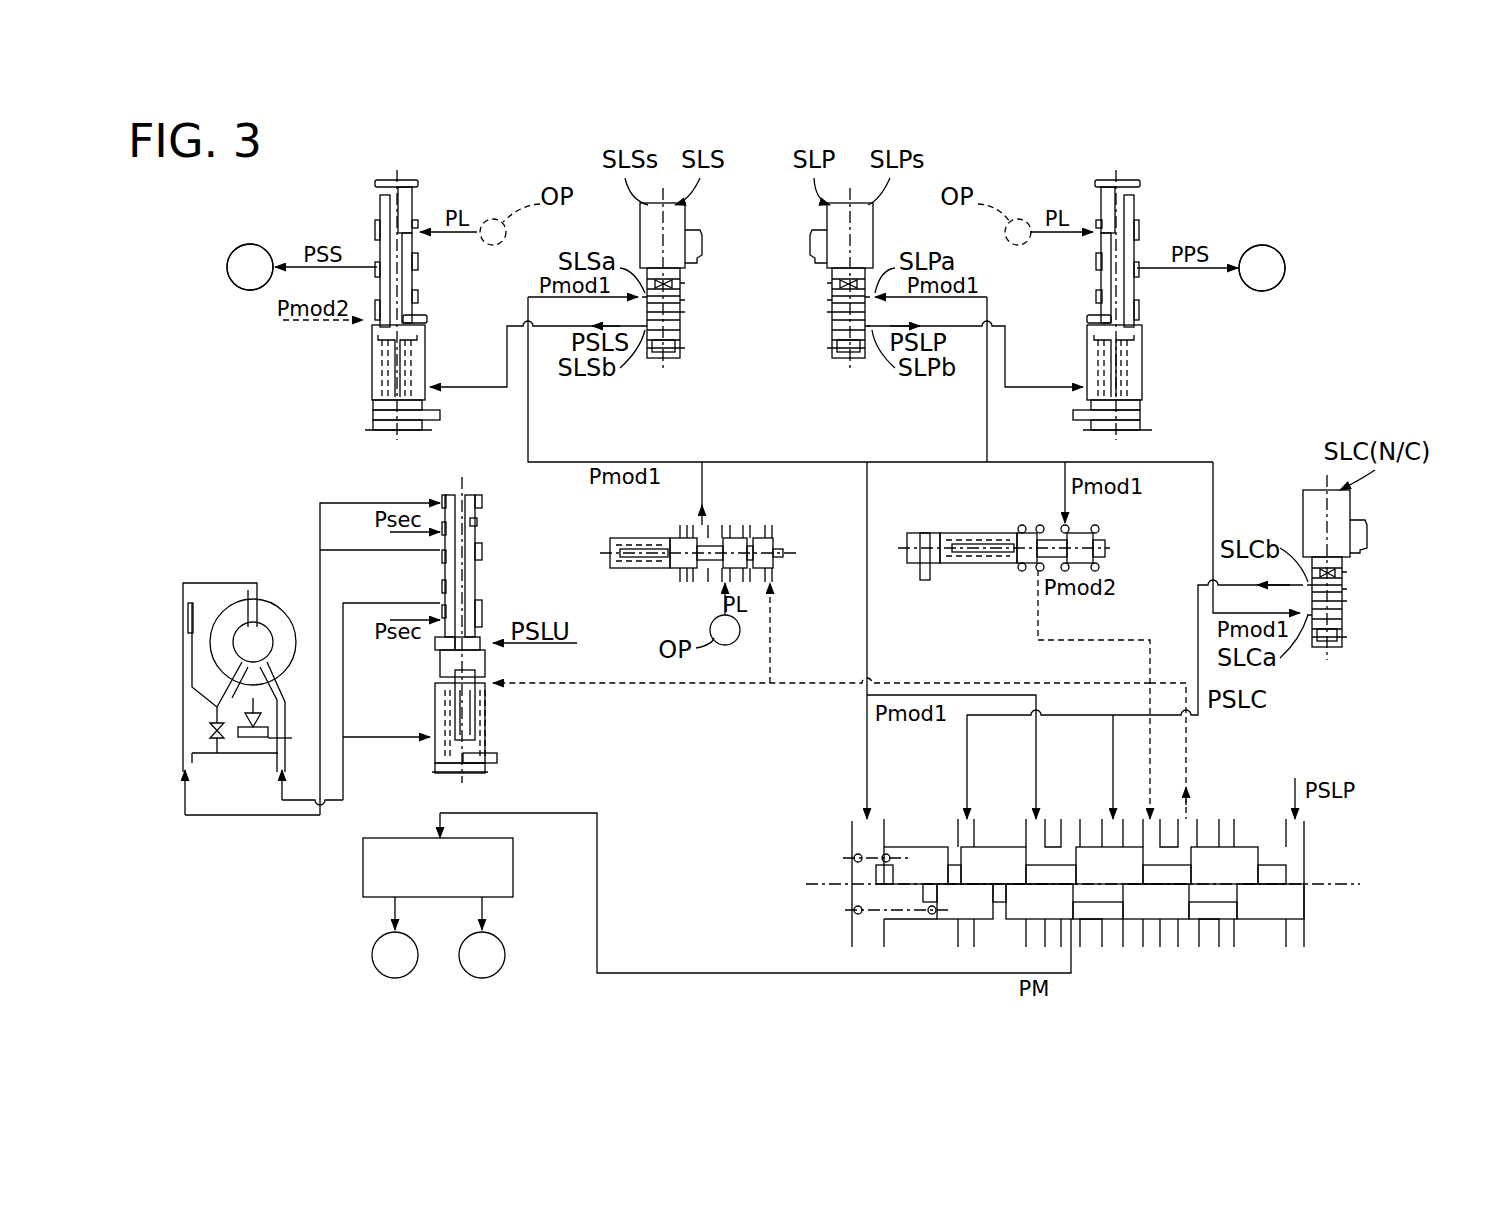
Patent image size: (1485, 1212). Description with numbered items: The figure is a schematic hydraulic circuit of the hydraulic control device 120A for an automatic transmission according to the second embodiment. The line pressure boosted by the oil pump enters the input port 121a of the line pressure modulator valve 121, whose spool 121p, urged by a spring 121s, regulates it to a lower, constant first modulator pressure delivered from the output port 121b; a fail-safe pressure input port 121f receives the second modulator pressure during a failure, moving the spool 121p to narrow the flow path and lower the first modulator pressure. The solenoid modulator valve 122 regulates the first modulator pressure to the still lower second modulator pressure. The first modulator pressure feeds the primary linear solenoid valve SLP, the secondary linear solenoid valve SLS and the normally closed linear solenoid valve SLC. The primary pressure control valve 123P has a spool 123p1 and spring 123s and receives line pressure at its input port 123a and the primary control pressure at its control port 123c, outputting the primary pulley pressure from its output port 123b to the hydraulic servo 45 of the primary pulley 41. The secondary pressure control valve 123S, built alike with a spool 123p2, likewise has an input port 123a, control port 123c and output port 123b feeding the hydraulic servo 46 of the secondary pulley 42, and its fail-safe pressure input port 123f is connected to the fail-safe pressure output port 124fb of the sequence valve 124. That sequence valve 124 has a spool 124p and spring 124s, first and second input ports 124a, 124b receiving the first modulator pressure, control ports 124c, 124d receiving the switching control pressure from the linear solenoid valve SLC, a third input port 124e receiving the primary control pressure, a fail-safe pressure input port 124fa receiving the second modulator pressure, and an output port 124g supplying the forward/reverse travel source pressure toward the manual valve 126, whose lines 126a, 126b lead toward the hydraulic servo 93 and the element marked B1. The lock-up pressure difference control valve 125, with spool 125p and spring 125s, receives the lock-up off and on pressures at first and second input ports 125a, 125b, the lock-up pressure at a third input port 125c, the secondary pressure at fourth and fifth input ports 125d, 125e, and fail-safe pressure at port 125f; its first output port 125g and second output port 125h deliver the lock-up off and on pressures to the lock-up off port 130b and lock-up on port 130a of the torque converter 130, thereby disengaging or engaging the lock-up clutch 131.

The hydraulic control device 120A is at (975, 152).
The secondary pressure control valve 123S is at (385, 175).
The primary pressure control valve 123P is at (1132, 175).
The input port 123a is at (420, 232).
The output port 123b is at (372, 252).
The control port 123c is at (427, 400).
The fail-safe pressure input port 123f is at (375, 312).
The spring 123s is at (422, 380).
The spool 123p1 is at (1100, 285).
The spool 123p2 is at (385, 212).
The hydraulic servo 46 is at (247, 244).
The secondary pulley 42 is at (250, 267).
The hydraulic servo 45 is at (1264, 244).
The primary pulley 41 is at (1262, 268).
The secondary linear solenoid valve SLS is at (671, 280).
The primary linear solenoid valve SLP is at (841, 280).
The linear solenoid valve SLC is at (1335, 567).
The line pressure modulator valve 121 is at (718, 555).
The input port 121a is at (722, 525).
The output port 121b is at (690, 525).
The fail-safe pressure input port 121f is at (775, 590).
The spool 121p is at (765, 540).
The spring 121s is at (640, 570).
The solenoid modulator valve 122 is at (933, 533).
The sequence valve 124 is at (1101, 867).
The first input port 124a is at (884, 817).
The second input port 124b is at (1030, 817).
The control port 124c is at (962, 817).
The control port 124d is at (1105, 817).
The third input port 124e is at (1286, 817).
The fail-safe pressure input port 124fa is at (1148, 817).
The fail-safe pressure output port 124fb is at (1198, 817).
The output port 124g is at (1075, 950).
The spool 124p is at (1255, 868).
The spring 124s is at (850, 911).
The lock-up pressure difference control valve 125 is at (469, 611).
The first input port 125a is at (440, 500).
The second input port 125b is at (438, 740).
The third input port 125c is at (490, 642).
The fourth input port 125d is at (482, 530).
The fifth input port 125e is at (440, 628).
The fail-safe pressure input port 125f is at (490, 690).
The first output port 125g is at (440, 548).
The second output port 125h is at (440, 605).
The spool 125p is at (485, 665).
The spring 125s is at (482, 742).
The manual valve 126 is at (439, 867).
The output port 126a is at (392, 905).
The output port 126b is at (485, 905).
The hydraulic servo 93 is at (395, 979).
The brake B1 is at (482, 955).
The torque converter 130 is at (204, 667).
The lock-up on port 130a is at (280, 775).
The lock-up off port 130b is at (182, 775).
The lock-up clutch 131 is at (185, 618).